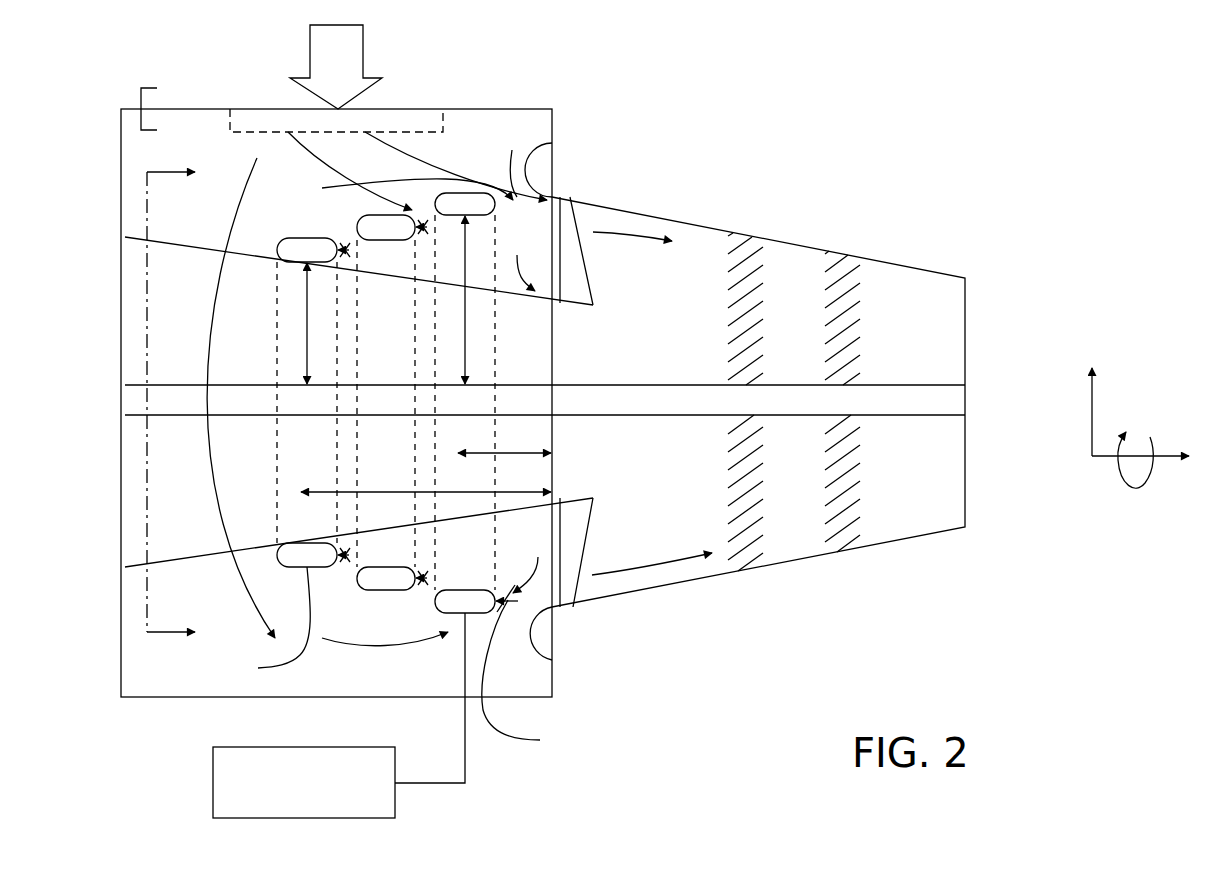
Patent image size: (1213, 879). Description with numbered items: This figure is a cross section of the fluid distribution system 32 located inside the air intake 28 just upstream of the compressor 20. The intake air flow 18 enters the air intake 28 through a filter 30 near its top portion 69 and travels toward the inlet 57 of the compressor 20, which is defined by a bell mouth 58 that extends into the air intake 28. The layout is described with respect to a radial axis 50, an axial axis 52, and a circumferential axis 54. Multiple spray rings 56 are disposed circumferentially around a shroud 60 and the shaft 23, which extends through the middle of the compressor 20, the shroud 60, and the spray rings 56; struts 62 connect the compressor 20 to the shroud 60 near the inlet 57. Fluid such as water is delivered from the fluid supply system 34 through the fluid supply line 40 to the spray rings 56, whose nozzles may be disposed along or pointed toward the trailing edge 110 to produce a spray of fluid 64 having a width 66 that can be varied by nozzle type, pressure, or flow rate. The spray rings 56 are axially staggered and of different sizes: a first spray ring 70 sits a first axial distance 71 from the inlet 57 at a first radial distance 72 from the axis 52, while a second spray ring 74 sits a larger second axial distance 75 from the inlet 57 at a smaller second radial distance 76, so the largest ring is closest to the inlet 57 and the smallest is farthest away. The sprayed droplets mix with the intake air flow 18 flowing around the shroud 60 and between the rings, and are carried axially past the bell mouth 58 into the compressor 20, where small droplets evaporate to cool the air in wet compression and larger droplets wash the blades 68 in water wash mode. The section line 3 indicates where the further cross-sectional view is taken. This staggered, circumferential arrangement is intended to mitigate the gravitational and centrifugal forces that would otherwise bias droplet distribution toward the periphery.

The section line 3- 3 is at (184, 404).
The intake air flow 18 is at (367, 78).
The compressor 20 is at (888, 262).
The shaft 23 is at (947, 418).
The air intake 28 is at (121, 152).
The filter 30 is at (262, 120).
The fluid distribution system 32 is at (589, 710).
The fluid supply system 34 is at (305, 747).
The fluid supply line 40 is at (430, 784).
The radial axis 50 is at (1093, 403).
The axial axis 52 is at (1093, 457).
The circumferential axis 54 is at (1141, 483).
The spray rings 56 is at (386, 591).
The inlet 57 is at (521, 257).
The bell mouth 58 is at (540, 168).
The shroud 60 is at (186, 558).
The struts 62 is at (580, 277).
The spray of fluid 64 is at (529, 677).
The width of spray 66 is at (532, 560).
The blades 68 is at (776, 272).
The top portion 69 is at (141, 92).
The first spray ring 70 is at (385, 188).
The first axial distance 71 is at (505, 455).
The first radial distance 72 is at (466, 327).
The second spray ring 74 is at (252, 627).
The second axial distance 75 is at (408, 491).
The second radial distance 76 is at (306, 323).
The trailing edge 110 is at (519, 158).